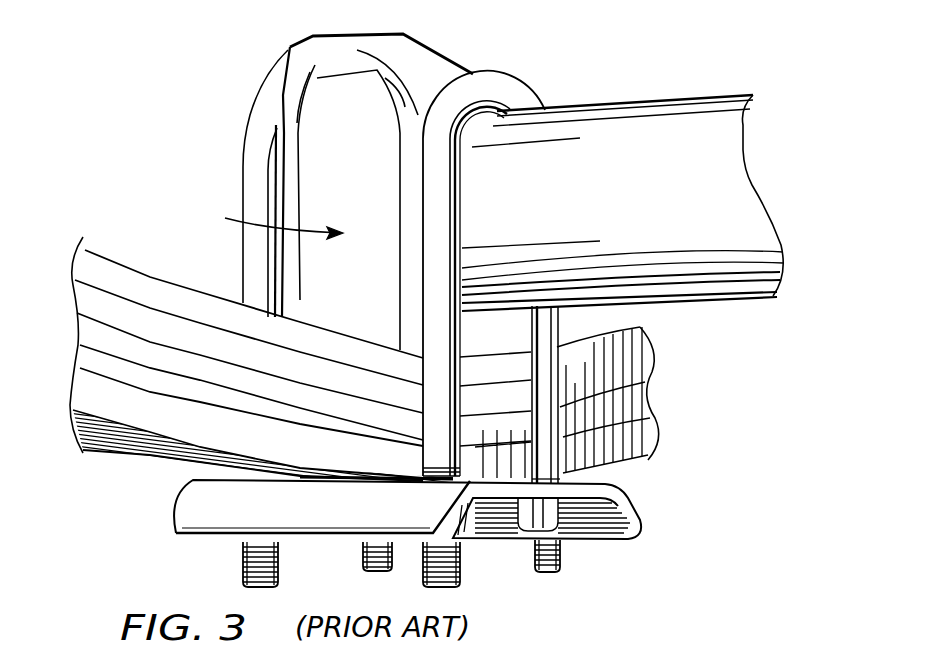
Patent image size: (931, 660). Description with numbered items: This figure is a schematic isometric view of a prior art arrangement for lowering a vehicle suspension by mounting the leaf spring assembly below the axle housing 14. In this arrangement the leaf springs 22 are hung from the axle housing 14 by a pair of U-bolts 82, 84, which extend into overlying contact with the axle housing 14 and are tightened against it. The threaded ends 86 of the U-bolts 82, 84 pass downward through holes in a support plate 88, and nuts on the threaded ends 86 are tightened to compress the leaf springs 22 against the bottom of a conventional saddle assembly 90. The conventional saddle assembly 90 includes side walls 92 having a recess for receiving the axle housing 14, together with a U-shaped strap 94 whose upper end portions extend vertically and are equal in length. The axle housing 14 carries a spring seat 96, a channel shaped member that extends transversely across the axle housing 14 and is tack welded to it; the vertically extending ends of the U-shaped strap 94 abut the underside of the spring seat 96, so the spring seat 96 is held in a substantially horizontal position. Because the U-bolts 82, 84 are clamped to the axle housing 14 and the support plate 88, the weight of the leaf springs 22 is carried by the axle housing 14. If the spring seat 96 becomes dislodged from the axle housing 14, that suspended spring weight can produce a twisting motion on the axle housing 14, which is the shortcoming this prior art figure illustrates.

The axle housing 14 is at (702, 127).
The leaf springs 22 is at (143, 280).
The U-bolt 82 is at (258, 162).
The U-bolt 84 is at (507, 92).
The threaded ends 86 is at (243, 565).
The support plate 88 is at (180, 506).
The conventional saddle assembly 90 is at (267, 220).
The side walls 92 is at (500, 320).
The U-shaped strap 94 is at (327, 113).
The spring seat 96 is at (338, 47).